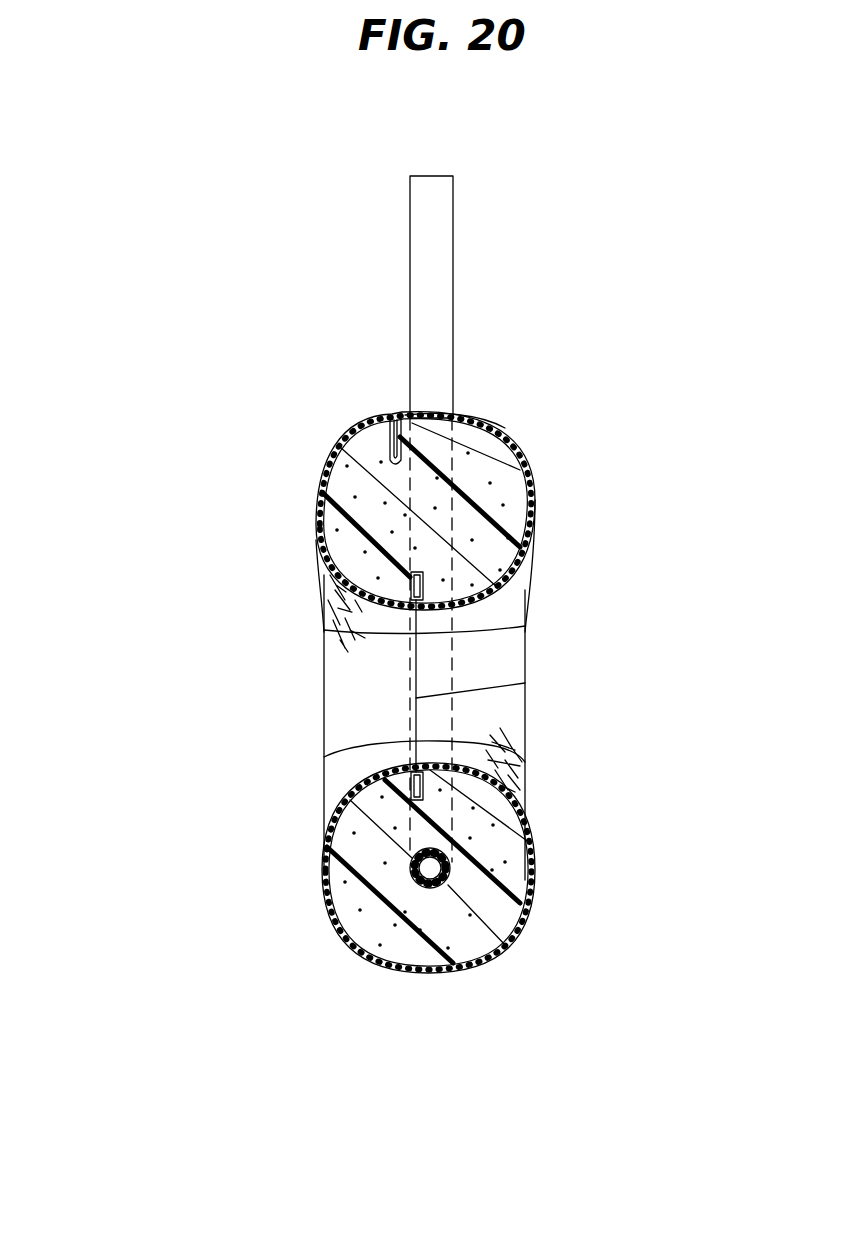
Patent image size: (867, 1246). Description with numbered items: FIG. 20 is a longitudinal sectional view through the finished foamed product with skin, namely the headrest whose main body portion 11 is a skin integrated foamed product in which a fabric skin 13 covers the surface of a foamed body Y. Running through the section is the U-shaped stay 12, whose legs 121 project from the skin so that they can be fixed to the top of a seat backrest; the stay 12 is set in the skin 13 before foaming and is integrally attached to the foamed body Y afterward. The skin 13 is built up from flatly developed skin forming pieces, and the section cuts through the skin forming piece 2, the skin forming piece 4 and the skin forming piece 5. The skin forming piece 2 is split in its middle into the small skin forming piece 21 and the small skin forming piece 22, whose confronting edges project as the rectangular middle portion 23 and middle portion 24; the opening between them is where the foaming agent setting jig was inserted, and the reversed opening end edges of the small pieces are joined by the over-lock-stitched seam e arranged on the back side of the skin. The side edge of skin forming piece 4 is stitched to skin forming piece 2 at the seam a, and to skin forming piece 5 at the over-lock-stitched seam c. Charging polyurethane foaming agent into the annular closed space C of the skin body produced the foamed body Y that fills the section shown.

The leg 121 is at (410, 236).
The stay 12 is at (408, 866).
The main body portion 11 is at (203, 599).
The skin forming piece 4 is at (324, 708).
The small skin forming piece 21 is at (456, 478).
The skin forming piece 2 is at (528, 518).
The small skin forming piece 22 is at (320, 490).
The middle portion 23 is at (478, 420).
The middle portion 24 is at (348, 422).
The foamed body Y is at (492, 467).
The seam a is at (525, 630).
The seam e is at (405, 603).
The seam c is at (322, 756).
The skin 13 is at (476, 927).
The skin forming piece 5 is at (414, 927).
The annular closed space C is at (376, 958).